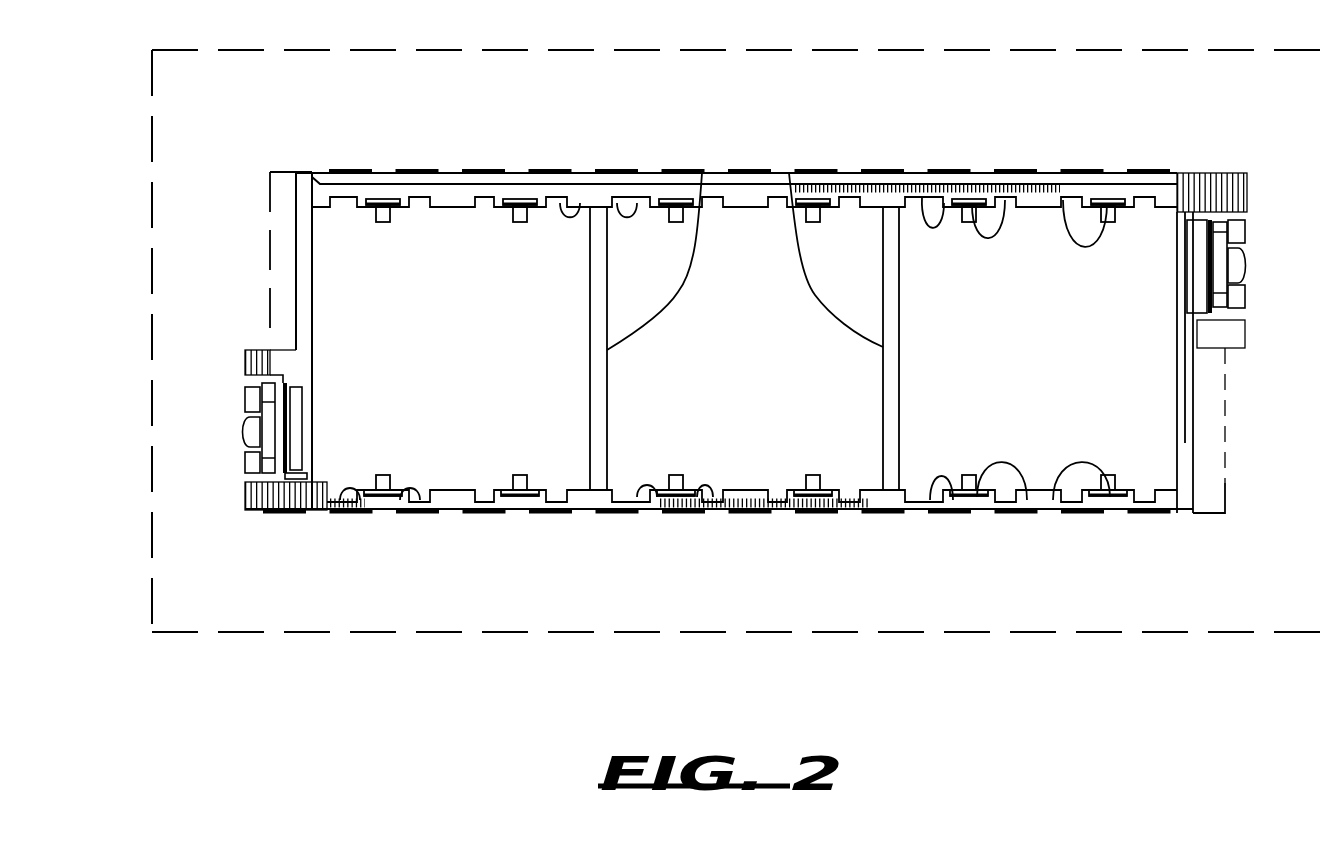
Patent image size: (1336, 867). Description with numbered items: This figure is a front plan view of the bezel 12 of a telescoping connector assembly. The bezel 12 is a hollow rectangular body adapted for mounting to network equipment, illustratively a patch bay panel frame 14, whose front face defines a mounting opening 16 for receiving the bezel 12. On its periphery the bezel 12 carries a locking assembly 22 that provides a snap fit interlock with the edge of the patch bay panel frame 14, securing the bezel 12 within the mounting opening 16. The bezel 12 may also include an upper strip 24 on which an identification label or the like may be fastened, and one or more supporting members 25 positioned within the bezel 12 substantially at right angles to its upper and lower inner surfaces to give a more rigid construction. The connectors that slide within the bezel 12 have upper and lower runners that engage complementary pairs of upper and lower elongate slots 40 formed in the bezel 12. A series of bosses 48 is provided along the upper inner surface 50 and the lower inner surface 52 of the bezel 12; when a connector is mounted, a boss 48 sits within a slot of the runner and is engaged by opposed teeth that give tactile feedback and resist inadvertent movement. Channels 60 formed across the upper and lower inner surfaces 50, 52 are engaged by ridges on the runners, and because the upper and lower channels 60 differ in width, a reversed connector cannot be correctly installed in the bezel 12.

The bezel 12 is at (1136, 146).
The patch bay panel frame 14 is at (1242, 632).
The mounting opening 16 is at (542, 516).
The locking assembly 22 is at (245, 463).
The upper strip 24 is at (404, 172).
The supporting member 25 is at (789, 173).
The elongate slot 40 is at (396, 514).
The boss 48 is at (1063, 200).
The upper inner surface 50 is at (922, 197).
The lower inner surface 52 is at (930, 500).
The channel 60 is at (610, 175).